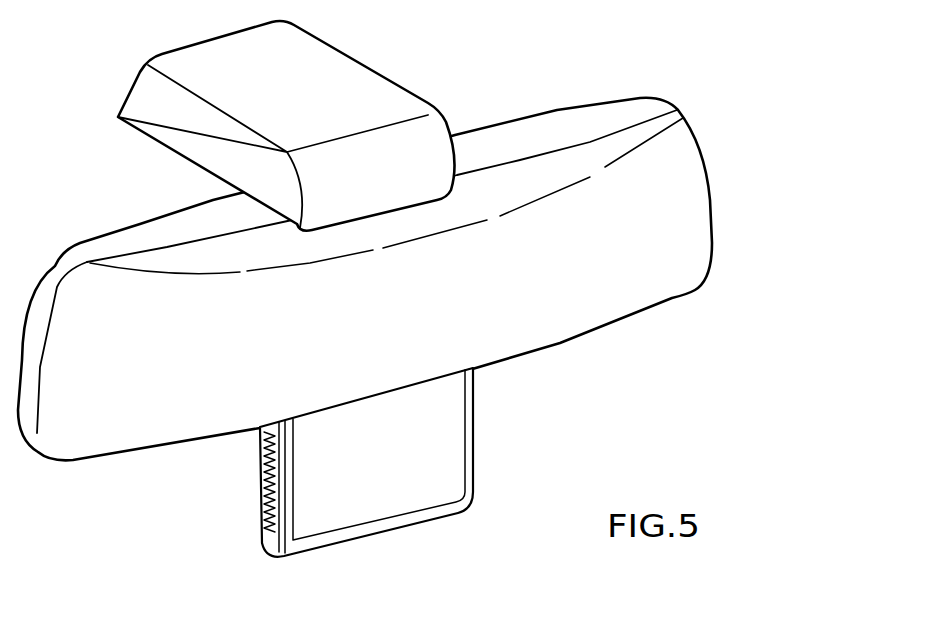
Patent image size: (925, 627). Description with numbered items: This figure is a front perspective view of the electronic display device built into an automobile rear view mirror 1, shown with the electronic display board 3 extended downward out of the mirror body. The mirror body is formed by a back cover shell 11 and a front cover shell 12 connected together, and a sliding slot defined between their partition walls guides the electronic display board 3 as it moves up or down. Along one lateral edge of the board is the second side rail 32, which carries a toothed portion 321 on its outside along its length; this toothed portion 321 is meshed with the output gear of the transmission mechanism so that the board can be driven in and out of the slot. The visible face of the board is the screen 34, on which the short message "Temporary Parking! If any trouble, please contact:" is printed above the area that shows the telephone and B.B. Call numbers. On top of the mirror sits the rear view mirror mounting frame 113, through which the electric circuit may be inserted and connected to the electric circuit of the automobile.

The automobile rear view mirror 1 is at (694, 124).
The back cover shell 11 is at (567, 105).
The front cover shell 12 is at (692, 240).
The rear view mirror mounting frame 113 is at (347, 82).
The electronic display board 3 is at (480, 457).
The second side rail 32 is at (260, 538).
The toothed portion 321 is at (258, 452).
The screen 34 is at (453, 420).